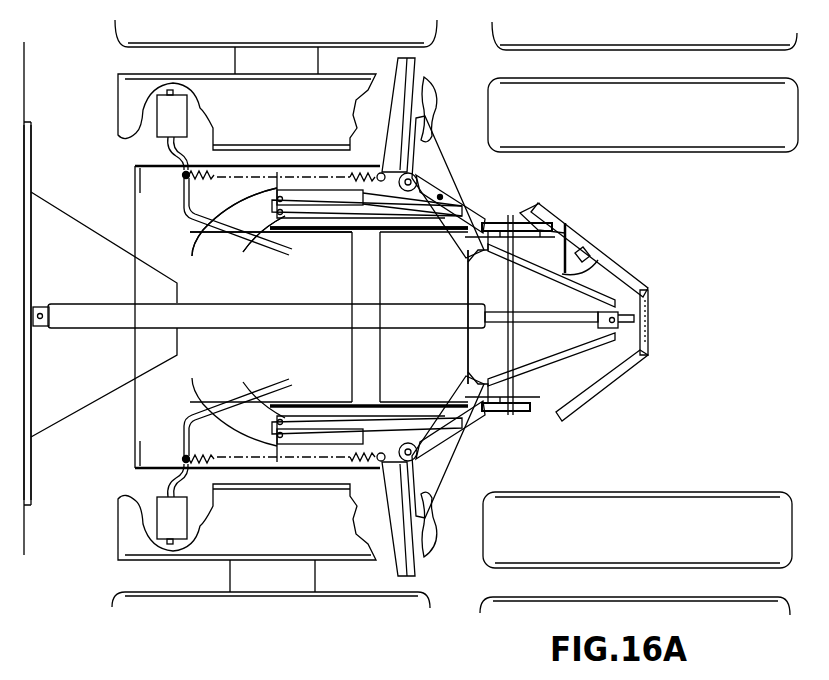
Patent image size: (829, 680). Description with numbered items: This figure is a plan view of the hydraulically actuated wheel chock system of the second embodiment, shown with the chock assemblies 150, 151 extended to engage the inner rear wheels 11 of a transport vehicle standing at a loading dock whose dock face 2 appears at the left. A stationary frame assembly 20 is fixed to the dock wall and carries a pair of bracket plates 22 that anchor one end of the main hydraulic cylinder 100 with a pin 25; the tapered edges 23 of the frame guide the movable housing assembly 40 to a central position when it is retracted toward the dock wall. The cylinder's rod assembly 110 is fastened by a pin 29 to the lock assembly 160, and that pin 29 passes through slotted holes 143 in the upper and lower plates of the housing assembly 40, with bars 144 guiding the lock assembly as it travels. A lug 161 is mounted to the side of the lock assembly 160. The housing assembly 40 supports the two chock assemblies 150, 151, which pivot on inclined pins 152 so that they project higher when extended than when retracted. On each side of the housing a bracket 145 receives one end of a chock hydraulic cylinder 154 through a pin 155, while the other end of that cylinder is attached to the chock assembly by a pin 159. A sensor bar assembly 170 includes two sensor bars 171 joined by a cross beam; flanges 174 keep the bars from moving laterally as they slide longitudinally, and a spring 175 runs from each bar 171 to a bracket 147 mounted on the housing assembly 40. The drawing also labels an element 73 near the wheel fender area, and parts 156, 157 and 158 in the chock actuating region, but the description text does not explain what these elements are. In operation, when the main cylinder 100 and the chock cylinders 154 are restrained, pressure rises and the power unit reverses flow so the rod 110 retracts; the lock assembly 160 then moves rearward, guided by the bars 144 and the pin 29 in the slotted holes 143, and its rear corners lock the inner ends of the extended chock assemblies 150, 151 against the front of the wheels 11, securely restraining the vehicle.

The dock face 2 is at (27, 78).
The wheels 11 is at (115, 103).
The stationary frame assembly 20 is at (58, 147).
The bracket plates 22 is at (60, 240).
The tapered edges 23 is at (133, 232).
The pin 25 is at (38, 328).
The pin 29 is at (645, 292).
The housing assembly 40 is at (630, 370).
The solenoid 73 is at (157, 118).
The hydraulic cylinder 100 is at (258, 318).
The rod assembly 110 is at (495, 335).
The slotted holes 143 is at (645, 332).
The bars 144 is at (490, 262).
The bracket 145 is at (250, 222).
The bracket 147 is at (377, 168).
The chock assembly 150 is at (418, 68).
The chock assembly 151 is at (412, 572).
The pivot pins 152 is at (418, 180).
The hydraulic cylinder 154 is at (316, 188).
The pin 155 is at (278, 214).
The lever 156 is at (440, 197).
The rod 157 is at (420, 222).
The hose 158 is at (350, 257).
The pin 159 is at (470, 212).
The lock assembly 160 is at (592, 378).
The lug 161 is at (583, 272).
The sensor bar assembly 170 is at (284, 299).
The sensor bars 171 is at (190, 216).
The flanges 174 is at (182, 465).
The spring 175 is at (215, 172).